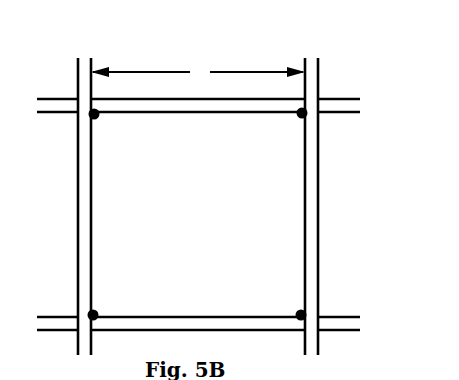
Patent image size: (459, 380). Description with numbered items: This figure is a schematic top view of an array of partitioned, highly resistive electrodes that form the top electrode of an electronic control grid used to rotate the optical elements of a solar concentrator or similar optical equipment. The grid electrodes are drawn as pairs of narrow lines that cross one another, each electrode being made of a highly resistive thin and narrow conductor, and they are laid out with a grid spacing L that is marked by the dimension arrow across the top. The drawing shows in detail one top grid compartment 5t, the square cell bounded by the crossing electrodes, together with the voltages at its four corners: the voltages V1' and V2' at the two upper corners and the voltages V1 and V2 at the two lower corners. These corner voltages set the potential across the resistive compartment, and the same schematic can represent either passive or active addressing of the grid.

The corner voltage V1' is at (112, 126).
The corner voltage V2' is at (285, 125).
The corner voltage V1 is at (109, 303).
The corner voltage V2 is at (286, 303).
The top grid compartment 5t is at (215, 223).
The grid spacing L is at (198, 72).